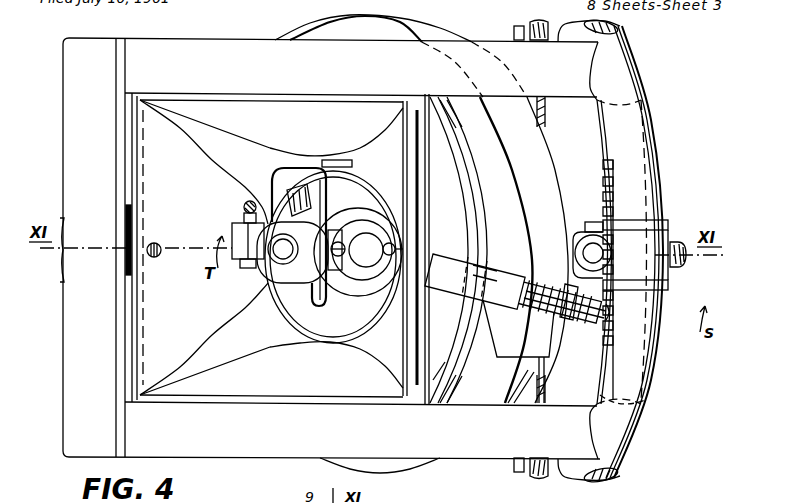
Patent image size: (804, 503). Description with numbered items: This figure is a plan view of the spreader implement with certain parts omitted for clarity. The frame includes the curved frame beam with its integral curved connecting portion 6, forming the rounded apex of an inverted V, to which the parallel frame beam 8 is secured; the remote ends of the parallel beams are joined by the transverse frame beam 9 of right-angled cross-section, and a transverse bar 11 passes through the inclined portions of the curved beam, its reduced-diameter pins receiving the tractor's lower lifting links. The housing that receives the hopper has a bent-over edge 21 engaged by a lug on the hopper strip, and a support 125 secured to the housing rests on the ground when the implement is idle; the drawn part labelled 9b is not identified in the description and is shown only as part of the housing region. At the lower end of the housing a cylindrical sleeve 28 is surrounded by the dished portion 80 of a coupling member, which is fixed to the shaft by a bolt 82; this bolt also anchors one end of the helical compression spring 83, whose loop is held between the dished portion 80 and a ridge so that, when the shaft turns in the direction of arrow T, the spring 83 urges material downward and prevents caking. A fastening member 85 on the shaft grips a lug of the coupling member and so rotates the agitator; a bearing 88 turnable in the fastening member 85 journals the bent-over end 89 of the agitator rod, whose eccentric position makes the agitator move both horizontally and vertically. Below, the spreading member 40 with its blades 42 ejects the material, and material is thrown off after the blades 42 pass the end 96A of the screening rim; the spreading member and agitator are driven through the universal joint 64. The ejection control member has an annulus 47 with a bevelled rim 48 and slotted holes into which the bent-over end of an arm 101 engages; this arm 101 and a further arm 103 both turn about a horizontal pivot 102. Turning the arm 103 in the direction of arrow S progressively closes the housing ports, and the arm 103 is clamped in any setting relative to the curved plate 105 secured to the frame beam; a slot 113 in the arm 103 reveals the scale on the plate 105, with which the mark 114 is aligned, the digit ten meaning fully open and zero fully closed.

The curved connecting portion 6 is at (652, 145).
The frame beam 8 is at (204, 46).
The transverse frame beam 9 is at (66, 370).
The drum cylinder 9b is at (299, 21).
The transverse bar 11 is at (520, 30).
The bent-over edge 21 is at (425, 393).
The cylindrical sleeve 28 is at (368, 220).
The spreading member 40 is at (418, 480).
The blades 42 is at (447, 396).
The annulus 47 is at (437, 230).
The rim 48 is at (452, 190).
The universal joint 64 is at (595, 216).
The dished portion 80 is at (334, 284).
The bolt 82 is at (346, 250).
The helical compression spring 83 is at (327, 342).
The fastening member 85 is at (255, 282).
The bearing 88 is at (238, 224).
The bent-over end 89 is at (244, 204).
The end of screening rim 96A is at (523, 390).
The arm 101 is at (468, 300).
The horizontal pivot 102 is at (564, 284).
The arm 103 is at (684, 352).
The curved plate 105 is at (605, 162).
The slot 113 is at (596, 322).
The mark 114 is at (578, 352).
The support 125 is at (59, 276).